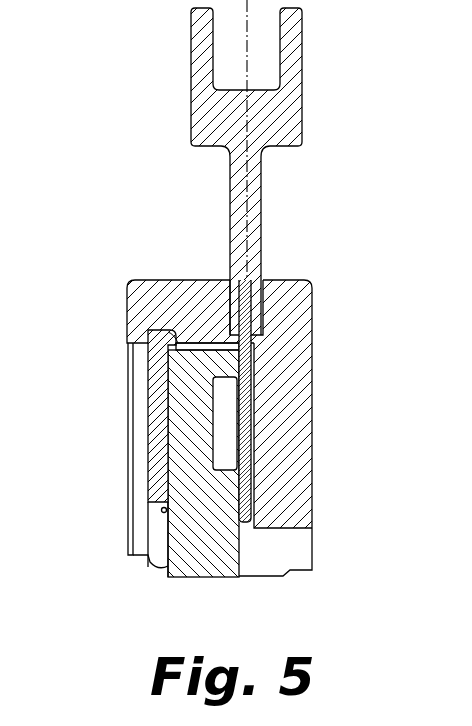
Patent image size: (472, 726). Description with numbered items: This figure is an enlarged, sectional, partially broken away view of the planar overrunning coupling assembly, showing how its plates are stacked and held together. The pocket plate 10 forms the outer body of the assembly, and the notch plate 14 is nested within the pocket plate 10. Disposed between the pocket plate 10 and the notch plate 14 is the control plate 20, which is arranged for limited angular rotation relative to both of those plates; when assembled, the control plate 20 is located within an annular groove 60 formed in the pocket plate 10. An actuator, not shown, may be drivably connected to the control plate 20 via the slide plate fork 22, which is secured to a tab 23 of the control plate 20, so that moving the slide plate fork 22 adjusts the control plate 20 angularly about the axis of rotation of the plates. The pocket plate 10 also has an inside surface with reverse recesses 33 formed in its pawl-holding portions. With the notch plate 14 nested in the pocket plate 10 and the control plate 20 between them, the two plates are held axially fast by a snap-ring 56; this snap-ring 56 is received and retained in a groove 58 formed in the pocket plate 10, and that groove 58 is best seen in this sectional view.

The pocket plate 10 is at (316, 328).
The notch plate 14 is at (125, 322).
The control plate 20 is at (258, 442).
The slide plate fork 22 is at (302, 110).
The tab 23 is at (263, 290).
The reverse recesses 33 is at (222, 438).
The snap-ring 56 is at (148, 427).
The groove 58 is at (170, 342).
The annular groove 60 is at (250, 494).